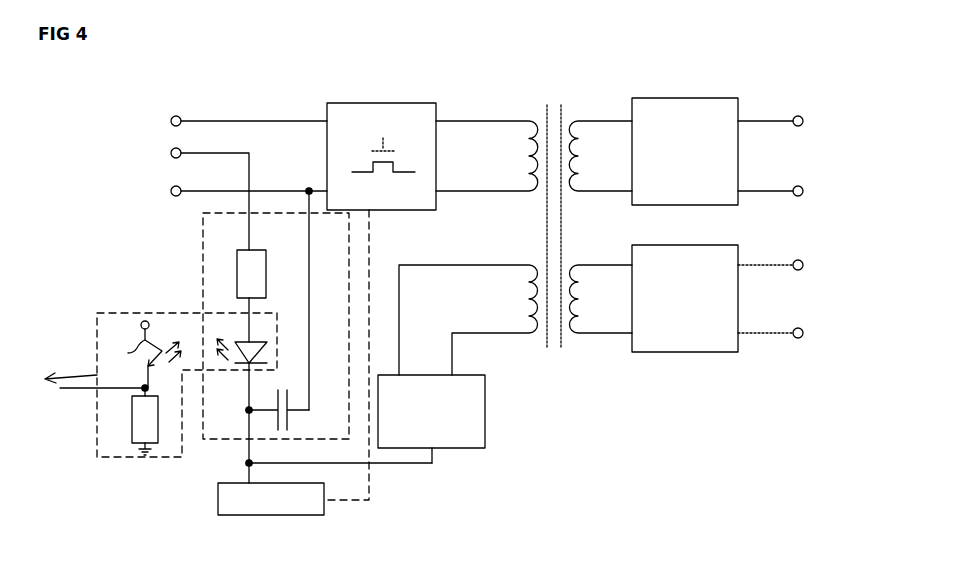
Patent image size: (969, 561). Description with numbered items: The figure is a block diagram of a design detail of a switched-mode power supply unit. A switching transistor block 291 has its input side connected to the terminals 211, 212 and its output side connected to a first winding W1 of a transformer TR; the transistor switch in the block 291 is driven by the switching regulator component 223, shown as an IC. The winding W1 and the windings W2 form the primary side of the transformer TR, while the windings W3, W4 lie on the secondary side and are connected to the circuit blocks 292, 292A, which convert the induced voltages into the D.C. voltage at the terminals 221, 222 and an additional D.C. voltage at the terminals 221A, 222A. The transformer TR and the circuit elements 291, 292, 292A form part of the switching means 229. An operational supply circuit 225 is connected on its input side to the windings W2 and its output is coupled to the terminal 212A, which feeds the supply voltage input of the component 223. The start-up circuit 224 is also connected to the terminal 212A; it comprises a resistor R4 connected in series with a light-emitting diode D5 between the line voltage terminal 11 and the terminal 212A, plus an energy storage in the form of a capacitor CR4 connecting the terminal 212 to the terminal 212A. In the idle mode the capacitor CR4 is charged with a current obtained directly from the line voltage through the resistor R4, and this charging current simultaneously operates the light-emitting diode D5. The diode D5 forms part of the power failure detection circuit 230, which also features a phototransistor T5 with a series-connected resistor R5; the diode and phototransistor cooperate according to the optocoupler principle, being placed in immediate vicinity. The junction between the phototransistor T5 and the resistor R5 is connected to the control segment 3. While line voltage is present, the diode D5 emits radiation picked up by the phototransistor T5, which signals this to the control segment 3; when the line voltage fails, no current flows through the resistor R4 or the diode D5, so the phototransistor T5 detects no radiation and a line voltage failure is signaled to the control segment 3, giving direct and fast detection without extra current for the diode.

The terminal 211 is at (170, 119).
The line voltage terminal 11 is at (168, 152).
The terminal 212 is at (170, 189).
The switching transistor block 291 is at (380, 103).
The transformer TR is at (515, 221).
The first winding W1 is at (528, 157).
The winding W2 is at (528, 298).
The winding W3 is at (578, 143).
The winding W4 is at (578, 287).
The circuit block 292 is at (658, 205).
The circuit block 292A is at (658, 352).
The terminal 221 is at (803, 121).
The terminal 222 is at (803, 191).
The terminal 221A is at (803, 265).
The terminal 222A is at (803, 333).
The operational supply circuit 225 is at (485, 418).
The start-up circuit 224 is at (249, 327).
The resistor R4 is at (266, 275).
The light-emitting diode D5 is at (246, 366).
The capacitor CR4 is at (290, 416).
The power failure detection circuit 230 is at (168, 366).
The phototransistor T5 is at (146, 354).
The resistor R5 is at (131, 398).
The control segment 3 is at (71, 370).
The terminal 212A is at (246, 463).
The switching regulator component 223 is at (324, 512).
The switching means 229 is at (592, 421).